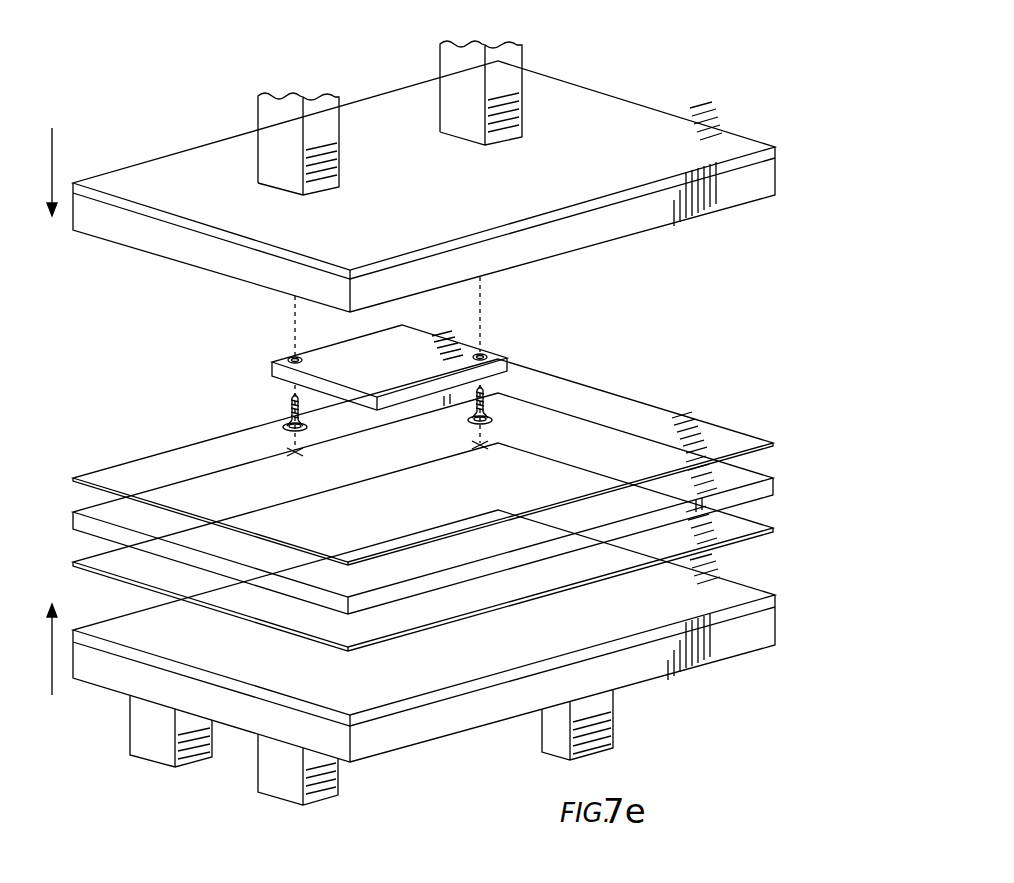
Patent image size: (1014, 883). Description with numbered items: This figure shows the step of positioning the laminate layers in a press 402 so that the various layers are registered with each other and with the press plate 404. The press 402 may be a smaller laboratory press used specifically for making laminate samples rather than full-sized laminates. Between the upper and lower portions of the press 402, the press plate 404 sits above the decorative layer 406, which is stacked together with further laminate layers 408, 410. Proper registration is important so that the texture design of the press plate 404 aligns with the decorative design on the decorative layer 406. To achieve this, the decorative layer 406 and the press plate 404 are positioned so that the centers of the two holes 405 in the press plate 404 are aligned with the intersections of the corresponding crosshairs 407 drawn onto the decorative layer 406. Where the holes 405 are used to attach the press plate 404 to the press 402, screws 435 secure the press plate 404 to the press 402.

The press 402 is at (198, 162).
The press plate 404 is at (407, 362).
The holes 405 is at (290, 359).
The decorative layer 406 is at (640, 427).
The crosshairs 407 is at (282, 453).
The middle layer 408 is at (723, 477).
The bottom sheet 410 is at (723, 530).
The screws 435 is at (490, 406).